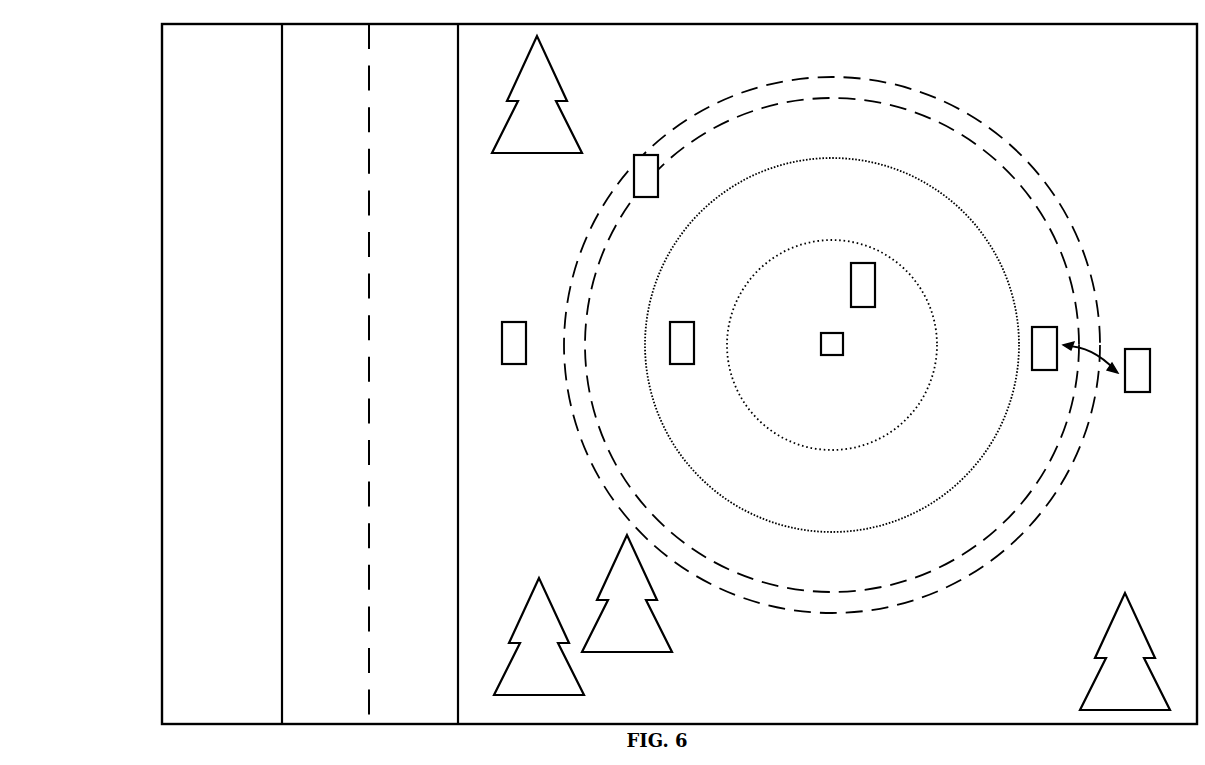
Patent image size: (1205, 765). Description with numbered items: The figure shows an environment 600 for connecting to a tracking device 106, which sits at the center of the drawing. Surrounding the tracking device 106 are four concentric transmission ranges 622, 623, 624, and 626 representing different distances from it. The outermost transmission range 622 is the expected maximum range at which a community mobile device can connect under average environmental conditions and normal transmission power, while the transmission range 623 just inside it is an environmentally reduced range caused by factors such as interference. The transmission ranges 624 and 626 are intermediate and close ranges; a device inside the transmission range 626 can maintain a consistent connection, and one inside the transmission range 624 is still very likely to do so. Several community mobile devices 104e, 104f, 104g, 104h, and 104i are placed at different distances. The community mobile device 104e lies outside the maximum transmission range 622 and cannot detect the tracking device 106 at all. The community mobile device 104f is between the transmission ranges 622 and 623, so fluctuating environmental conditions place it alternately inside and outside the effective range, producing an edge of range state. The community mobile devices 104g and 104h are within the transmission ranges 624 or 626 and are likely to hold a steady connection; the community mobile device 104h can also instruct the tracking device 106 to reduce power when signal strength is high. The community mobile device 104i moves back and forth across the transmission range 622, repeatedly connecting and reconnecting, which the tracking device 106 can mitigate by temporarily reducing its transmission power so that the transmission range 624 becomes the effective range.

The environment 600 is at (1180, 49).
The transmission range 622 is at (820, 74).
The transmission range 623 is at (820, 95).
The transmission range 624 is at (820, 155).
The transmission range 626 is at (832, 337).
The community mobile device 104e is at (514, 355).
The community mobile device 104f is at (650, 186).
The community mobile device 104g is at (683, 355).
The community mobile device 104h is at (866, 296).
The community mobile device 104i is at (1091, 370).
The tracking device 106 is at (835, 365).